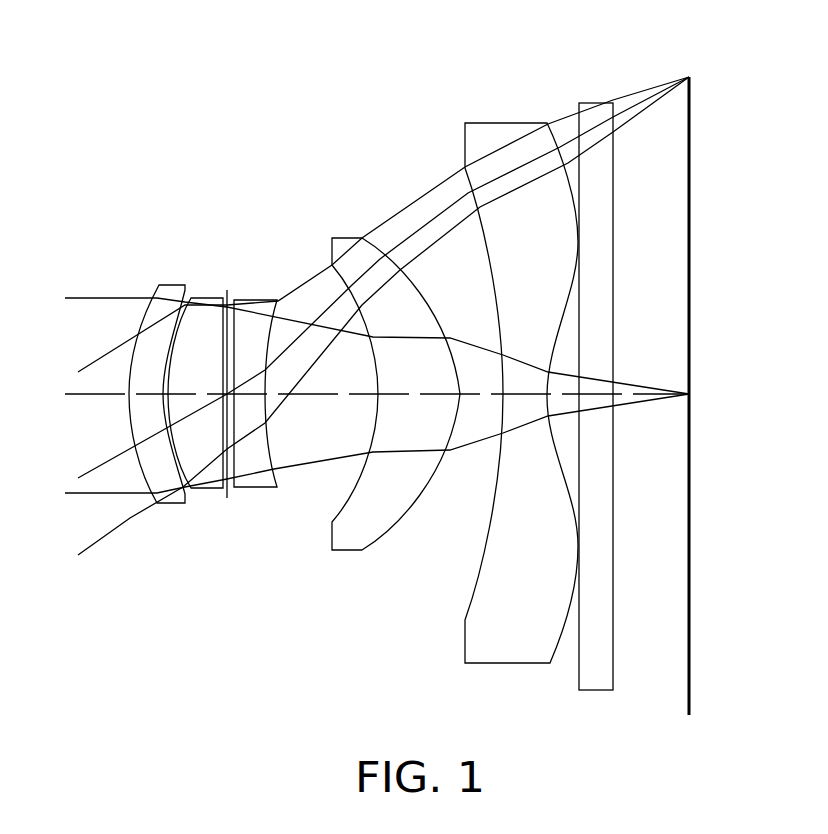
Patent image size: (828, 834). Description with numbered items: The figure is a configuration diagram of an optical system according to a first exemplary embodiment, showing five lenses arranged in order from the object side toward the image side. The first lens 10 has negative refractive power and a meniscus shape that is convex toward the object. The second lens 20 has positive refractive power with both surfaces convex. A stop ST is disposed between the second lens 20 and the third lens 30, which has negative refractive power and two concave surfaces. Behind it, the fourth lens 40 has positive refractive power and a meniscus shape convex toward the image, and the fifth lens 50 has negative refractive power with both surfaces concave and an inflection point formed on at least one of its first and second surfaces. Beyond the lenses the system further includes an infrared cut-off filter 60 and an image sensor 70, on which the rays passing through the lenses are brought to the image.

The first lens 10 is at (167, 284).
The second lens 20 is at (203, 297).
The stop ST is at (227, 290).
The third lens 30 is at (255, 297).
The fourth lens 40 is at (342, 237).
The fifth lens 50 is at (505, 122).
The infrared cut-off filter 60 is at (593, 103).
The image sensor 70 is at (700, 92).